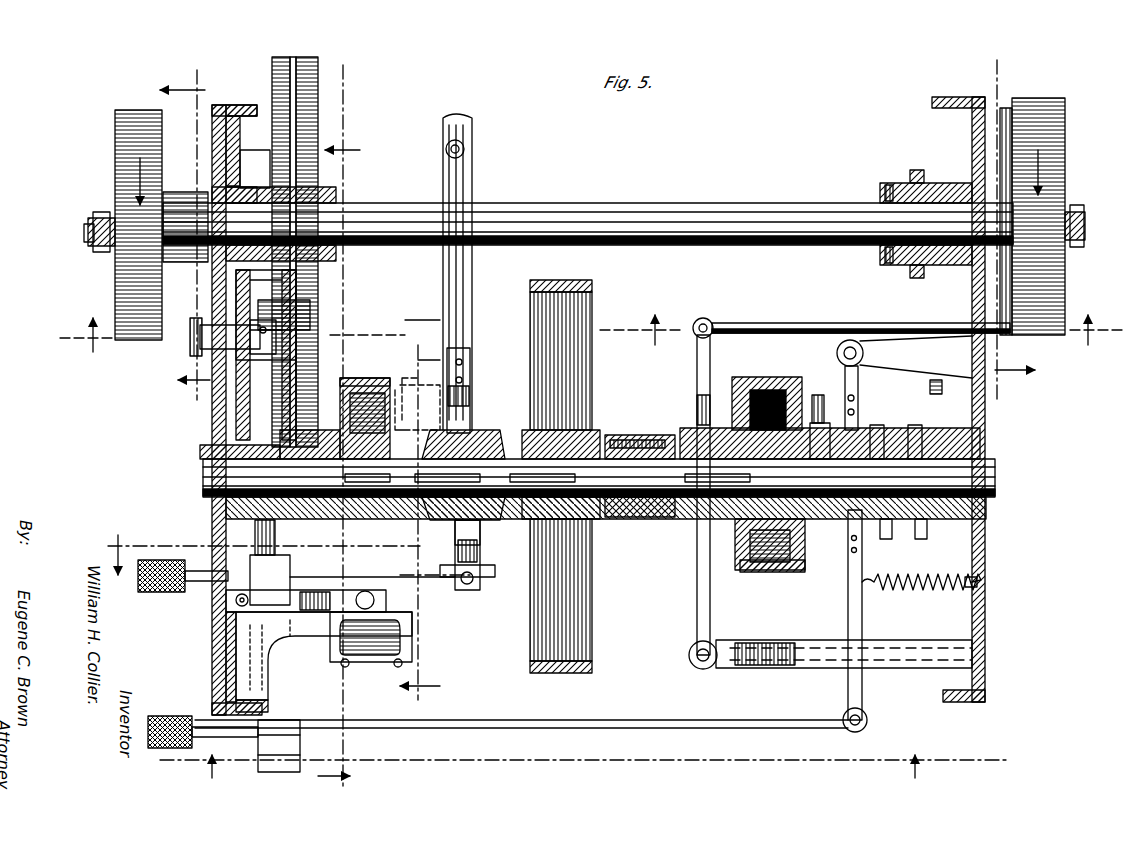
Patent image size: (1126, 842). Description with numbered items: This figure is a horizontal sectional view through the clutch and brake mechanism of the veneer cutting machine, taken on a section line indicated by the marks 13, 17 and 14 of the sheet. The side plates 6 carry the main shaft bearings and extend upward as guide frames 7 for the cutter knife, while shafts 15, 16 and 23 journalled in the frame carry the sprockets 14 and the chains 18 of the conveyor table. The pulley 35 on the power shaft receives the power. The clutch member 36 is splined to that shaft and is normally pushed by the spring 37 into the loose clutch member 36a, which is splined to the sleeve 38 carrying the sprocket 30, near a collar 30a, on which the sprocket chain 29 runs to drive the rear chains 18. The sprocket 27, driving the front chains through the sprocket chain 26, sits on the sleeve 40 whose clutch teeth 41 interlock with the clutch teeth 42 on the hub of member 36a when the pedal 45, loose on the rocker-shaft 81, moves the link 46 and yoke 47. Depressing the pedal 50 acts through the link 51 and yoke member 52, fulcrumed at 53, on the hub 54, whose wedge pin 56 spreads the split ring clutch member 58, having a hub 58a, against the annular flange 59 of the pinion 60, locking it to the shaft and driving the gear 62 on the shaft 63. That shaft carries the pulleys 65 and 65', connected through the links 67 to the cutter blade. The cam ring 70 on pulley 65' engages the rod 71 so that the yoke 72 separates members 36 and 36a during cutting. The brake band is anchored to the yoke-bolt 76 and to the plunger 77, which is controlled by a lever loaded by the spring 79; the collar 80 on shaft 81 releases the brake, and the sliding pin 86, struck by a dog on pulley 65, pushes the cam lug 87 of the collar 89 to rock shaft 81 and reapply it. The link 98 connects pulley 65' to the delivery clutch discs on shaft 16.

The side plates 6 is at (1000, 540).
The guide frames 7 is at (339, 425).
The section line 13 is at (420, 518).
The sprockets 14 is at (863, 328).
The shaft 15 is at (1011, 223).
The shaft 16 is at (185, 233).
The section line 17 is at (230, 333).
The chains 18 is at (277, 565).
The shaft 23 is at (203, 470).
The sprocket chain 26 is at (876, 350).
The sprocket 27 is at (884, 540).
The sprocket chain 29 is at (922, 410).
The sprocket 30 is at (920, 540).
The bearing collar 30a is at (912, 172).
The pulley 35 is at (592, 282).
The clutch member 36 is at (738, 568).
The loose clutch member 36a is at (800, 572).
The spring 37 is at (660, 518).
The sleeve 38 is at (876, 425).
The sleeve 40 is at (912, 425).
The clutch teeth 41 is at (822, 420).
The clutch teeth 42 is at (790, 375).
The pedal 45 is at (160, 716).
The link 46 is at (650, 718).
The yoke 47 is at (848, 574).
The pedal 50 is at (140, 585).
The link 51 is at (400, 560).
The yoke member 52 is at (470, 392).
The fulcrum 53 is at (465, 150).
The hub 54 is at (480, 432).
The wedge pin 56 is at (404, 392).
The split ring clutch member 58 is at (355, 378).
The hub 58a is at (415, 418).
The annular flange 59 is at (378, 378).
The pinion 60 is at (280, 438).
The gear 62 is at (320, 120).
The shaft 63 is at (355, 205).
The pulley 65 is at (120, 225).
The pulley 65' is at (1059, 216).
The links 67 is at (95, 220).
The cam ring 70 is at (1006, 108).
The rod 71 is at (815, 323).
The yoke 72 is at (697, 372).
The yoke-bolt 76 is at (412, 640).
The plunger 77 is at (412, 604).
The spring 79 is at (226, 605).
The collar 80 is at (250, 565).
The rocker-shaft 81 is at (300, 290).
The sliding pin 86 is at (205, 350).
The cam lug 87 is at (300, 318).
The collar 89 is at (235, 380).
The link 98 is at (90, 244).